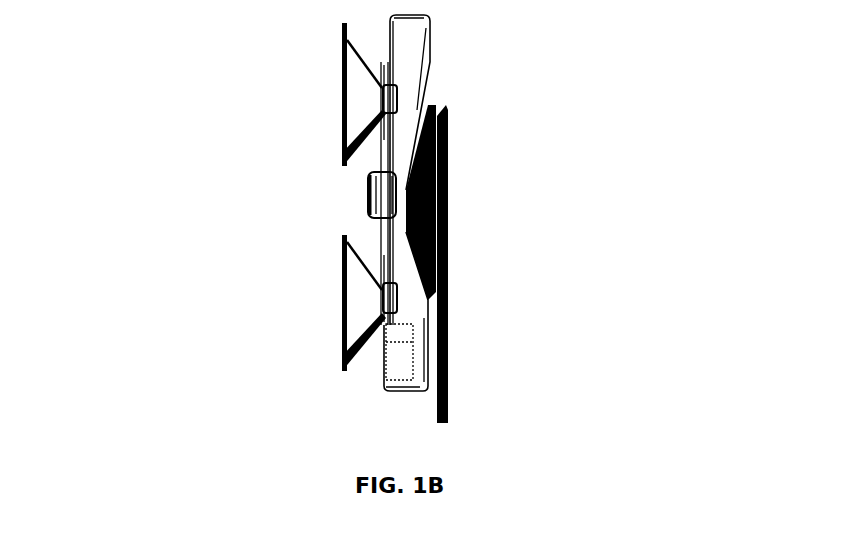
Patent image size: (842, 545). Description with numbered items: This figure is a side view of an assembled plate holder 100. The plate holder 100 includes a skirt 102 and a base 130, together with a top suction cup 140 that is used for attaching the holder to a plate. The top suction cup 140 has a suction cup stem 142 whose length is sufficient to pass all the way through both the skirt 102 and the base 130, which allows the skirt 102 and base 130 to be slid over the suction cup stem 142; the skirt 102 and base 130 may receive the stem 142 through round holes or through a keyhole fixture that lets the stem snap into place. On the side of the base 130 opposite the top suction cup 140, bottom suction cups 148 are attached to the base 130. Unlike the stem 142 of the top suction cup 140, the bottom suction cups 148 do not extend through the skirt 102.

The plate holder 100 is at (520, 63).
The skirt 102 is at (407, 308).
The base 130 is at (377, 153).
The top suction cup 140 is at (447, 153).
The suction cup stem 142 is at (368, 205).
The bottom suction cups 148 is at (343, 290).